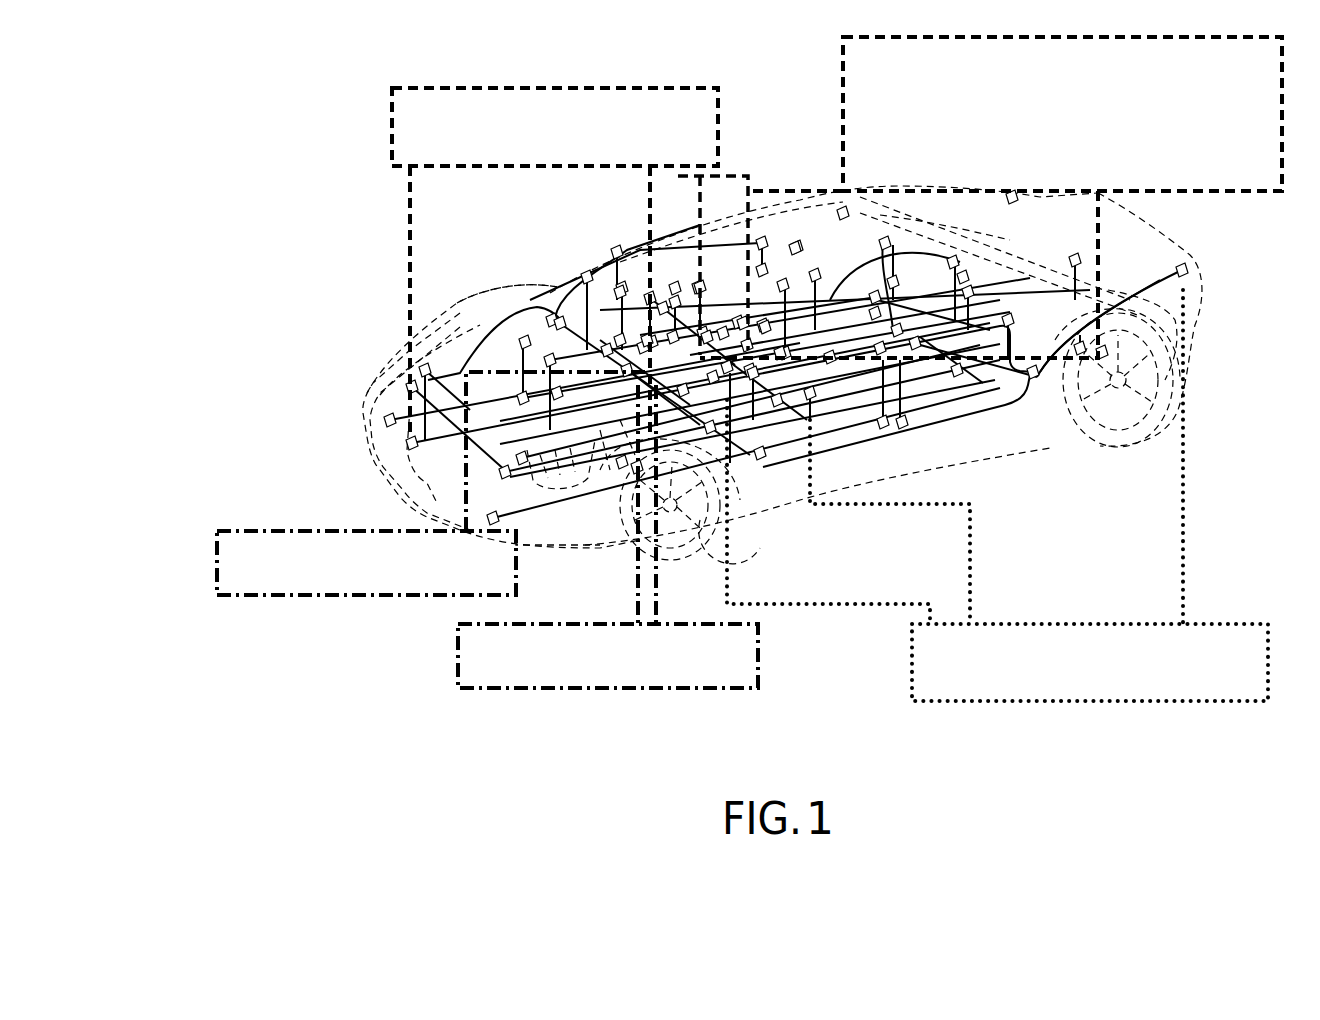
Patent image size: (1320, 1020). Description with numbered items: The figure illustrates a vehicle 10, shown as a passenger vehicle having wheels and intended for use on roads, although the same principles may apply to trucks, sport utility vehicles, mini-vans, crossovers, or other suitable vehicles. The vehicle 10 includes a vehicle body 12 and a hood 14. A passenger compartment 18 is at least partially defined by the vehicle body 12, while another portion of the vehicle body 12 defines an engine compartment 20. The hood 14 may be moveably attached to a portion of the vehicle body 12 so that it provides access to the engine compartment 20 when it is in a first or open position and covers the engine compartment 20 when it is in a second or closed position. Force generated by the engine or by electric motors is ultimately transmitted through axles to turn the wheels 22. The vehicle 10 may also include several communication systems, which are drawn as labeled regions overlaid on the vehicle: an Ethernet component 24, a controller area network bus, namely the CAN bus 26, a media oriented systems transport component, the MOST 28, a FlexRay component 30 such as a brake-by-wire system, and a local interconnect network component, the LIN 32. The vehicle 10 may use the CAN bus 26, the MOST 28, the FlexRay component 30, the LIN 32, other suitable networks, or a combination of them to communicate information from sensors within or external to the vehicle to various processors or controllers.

The vehicle 10 is at (190, 180).
The vehicle body 12 is at (766, 316).
The hood 14 is at (502, 312).
The passenger compartment 18 is at (668, 258).
The engine compartment 20 is at (356, 375).
The wheels 22 is at (618, 524).
The Ethernet component 24 is at (194, 559).
The controller area network (CAN) bus 26 is at (377, 122).
The media oriented systems transport component (MOST) 28 is at (822, 103).
The FlexRay component 30 is at (434, 653).
The local interconnect network component (LIN) 32 is at (899, 653).